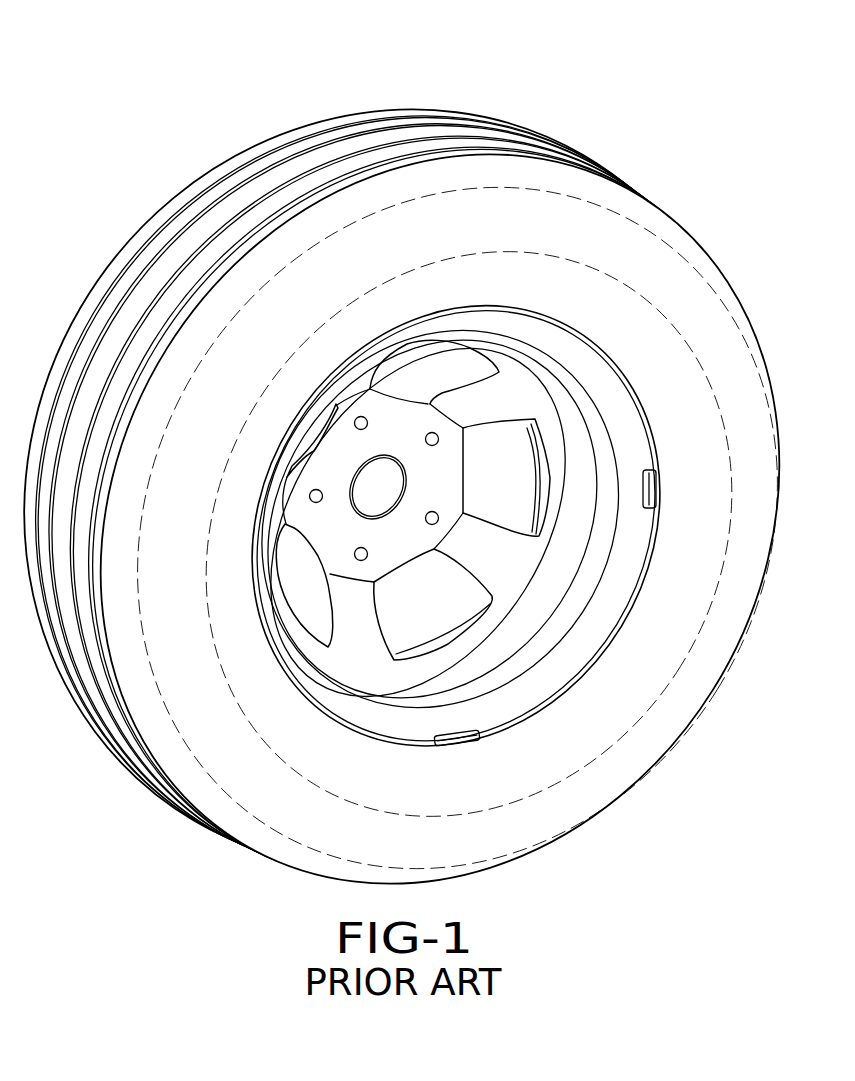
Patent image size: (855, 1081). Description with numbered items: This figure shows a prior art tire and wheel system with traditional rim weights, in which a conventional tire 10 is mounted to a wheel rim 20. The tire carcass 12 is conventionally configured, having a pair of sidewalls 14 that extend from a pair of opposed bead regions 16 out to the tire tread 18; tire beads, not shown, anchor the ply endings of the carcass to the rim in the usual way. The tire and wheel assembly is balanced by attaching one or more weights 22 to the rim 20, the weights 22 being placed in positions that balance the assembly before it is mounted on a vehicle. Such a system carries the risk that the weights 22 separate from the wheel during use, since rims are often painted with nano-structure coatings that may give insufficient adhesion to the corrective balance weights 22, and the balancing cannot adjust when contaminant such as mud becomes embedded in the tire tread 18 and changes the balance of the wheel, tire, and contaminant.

The tire 10 is at (427, 506).
The tire carcass 12 is at (427, 506).
The sidewalls 14 is at (684, 700).
The bead regions 16 is at (553, 709).
The tire tread 18 is at (263, 183).
The wheel rim 20 is at (397, 417).
The weights 22 is at (652, 487).